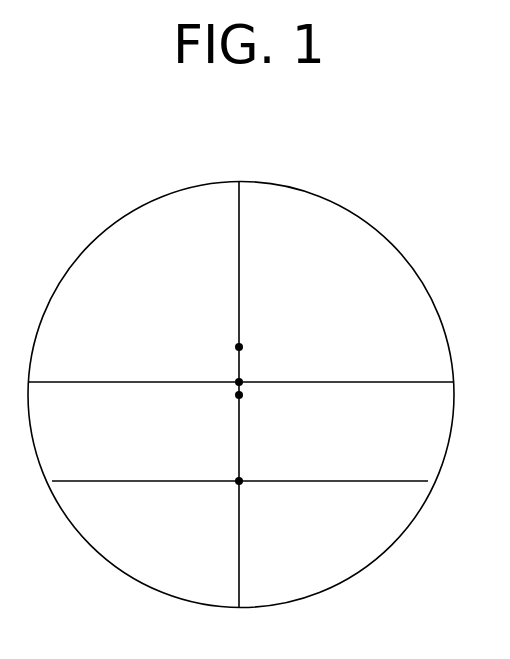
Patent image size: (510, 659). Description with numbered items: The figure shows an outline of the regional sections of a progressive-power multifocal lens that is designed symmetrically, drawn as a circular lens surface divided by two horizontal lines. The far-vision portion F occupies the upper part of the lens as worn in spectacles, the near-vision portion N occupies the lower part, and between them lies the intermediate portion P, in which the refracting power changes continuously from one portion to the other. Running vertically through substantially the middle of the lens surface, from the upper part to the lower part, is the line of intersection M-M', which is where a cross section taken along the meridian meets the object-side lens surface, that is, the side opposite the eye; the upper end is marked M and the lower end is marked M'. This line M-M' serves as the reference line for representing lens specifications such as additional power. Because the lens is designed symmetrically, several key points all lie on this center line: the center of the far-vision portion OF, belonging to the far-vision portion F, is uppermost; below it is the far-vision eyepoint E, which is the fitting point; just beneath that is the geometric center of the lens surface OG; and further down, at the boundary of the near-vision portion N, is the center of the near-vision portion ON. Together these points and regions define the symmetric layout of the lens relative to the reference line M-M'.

The upper end of the meridian line of intersection M is at (237, 165).
The lower end of the meridian line of intersection M' is at (246, 628).
The far-vision eyepoint E is at (241, 371).
The center of far-vision portion OF is at (256, 339).
The geometric center of lens surface OG is at (258, 402).
The center of near-vision portion ON is at (240, 494).
The far-vision portion F is at (394, 345).
The intermediate portion P is at (395, 432).
The near-vision portion N is at (396, 515).